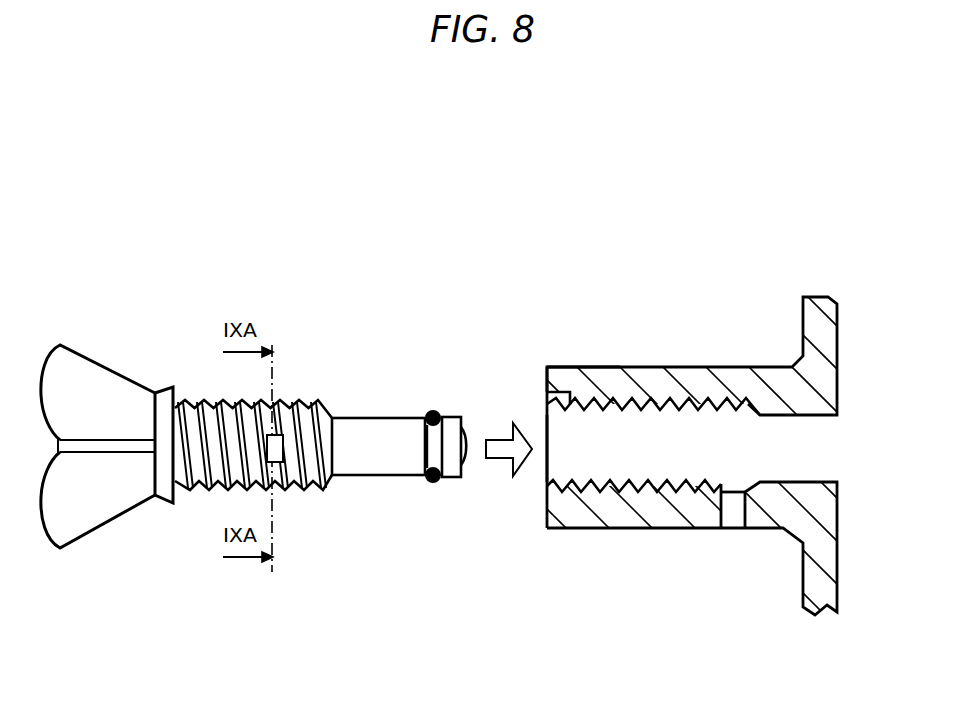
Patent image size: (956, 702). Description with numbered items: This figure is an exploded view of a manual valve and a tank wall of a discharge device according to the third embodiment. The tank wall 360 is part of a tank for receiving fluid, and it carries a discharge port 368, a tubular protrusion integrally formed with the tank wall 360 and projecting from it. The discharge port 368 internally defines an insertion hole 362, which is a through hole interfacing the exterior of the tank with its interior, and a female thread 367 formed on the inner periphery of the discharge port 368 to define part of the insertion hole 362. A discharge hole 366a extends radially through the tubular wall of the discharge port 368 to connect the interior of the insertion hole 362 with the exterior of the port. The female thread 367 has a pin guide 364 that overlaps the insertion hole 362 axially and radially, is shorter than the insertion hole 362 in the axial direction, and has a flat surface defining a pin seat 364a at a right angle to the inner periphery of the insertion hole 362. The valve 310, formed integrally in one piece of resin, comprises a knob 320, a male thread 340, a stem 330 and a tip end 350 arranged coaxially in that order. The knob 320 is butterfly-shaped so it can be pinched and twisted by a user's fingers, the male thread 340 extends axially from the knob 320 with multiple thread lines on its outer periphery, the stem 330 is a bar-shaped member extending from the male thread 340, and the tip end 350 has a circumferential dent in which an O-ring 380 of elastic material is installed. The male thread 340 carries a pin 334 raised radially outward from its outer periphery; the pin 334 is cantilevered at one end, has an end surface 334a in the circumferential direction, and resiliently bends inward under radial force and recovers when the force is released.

The valve 310 is at (278, 450).
The knob 320 is at (123, 502).
The male thread 340 is at (193, 488).
The pin 334 is at (277, 452).
The end surface 334a is at (283, 407).
The stem 330 is at (367, 458).
The O-ring 380 is at (433, 482).
The tip end 350 is at (452, 428).
The tank wall 360 is at (594, 414).
The discharge port 368 is at (608, 315).
The pin seat 364a is at (560, 390).
The pin guide 364 is at (570, 392).
The female thread 367 is at (660, 405).
The insertion hole 362 is at (587, 462).
The discharge hole 366a is at (737, 547).